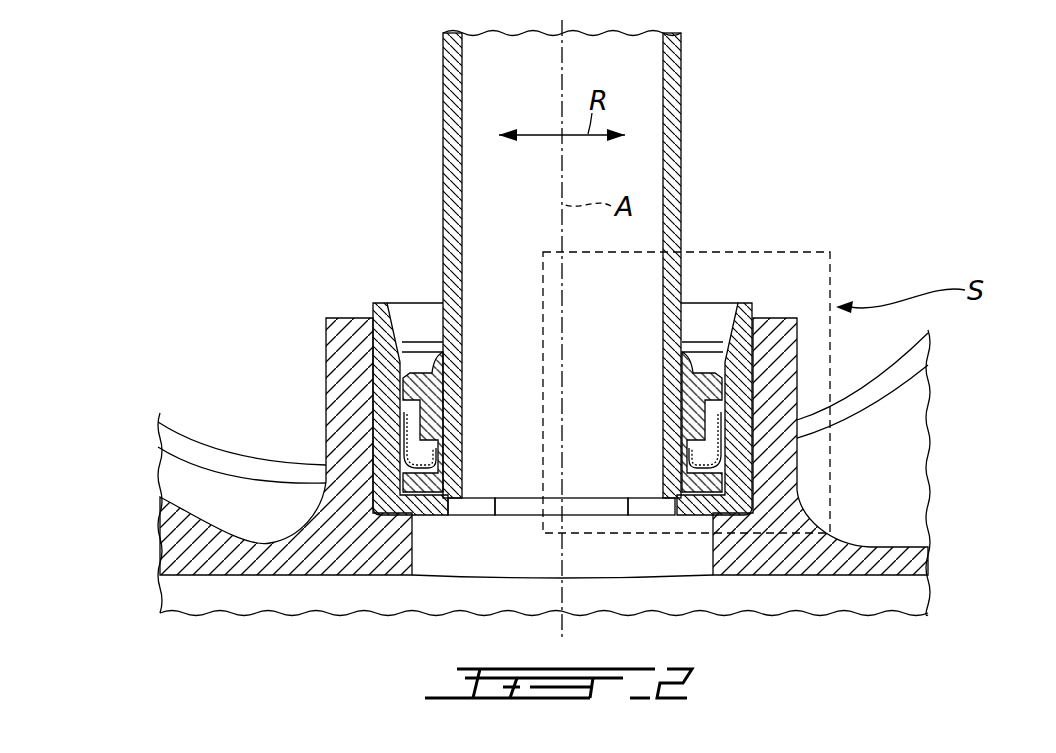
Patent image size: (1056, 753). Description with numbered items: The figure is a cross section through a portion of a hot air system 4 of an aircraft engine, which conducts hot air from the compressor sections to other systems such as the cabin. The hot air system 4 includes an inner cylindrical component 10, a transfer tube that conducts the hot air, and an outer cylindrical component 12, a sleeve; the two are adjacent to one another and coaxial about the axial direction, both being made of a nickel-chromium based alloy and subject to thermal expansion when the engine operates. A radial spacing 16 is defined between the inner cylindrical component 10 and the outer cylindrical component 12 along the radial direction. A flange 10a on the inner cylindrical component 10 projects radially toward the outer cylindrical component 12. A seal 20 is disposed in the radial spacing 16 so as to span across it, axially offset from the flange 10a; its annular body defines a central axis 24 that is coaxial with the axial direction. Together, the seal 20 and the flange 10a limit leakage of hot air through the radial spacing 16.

The hot air system 4 is at (366, 121).
The inner cylindrical component 10 is at (677, 110).
The flange 10a is at (710, 375).
The outer cylindrical component 12 is at (747, 305).
The radial spacing 16 is at (707, 492).
The seal 20 is at (718, 445).
The central axis 24 is at (553, 320).